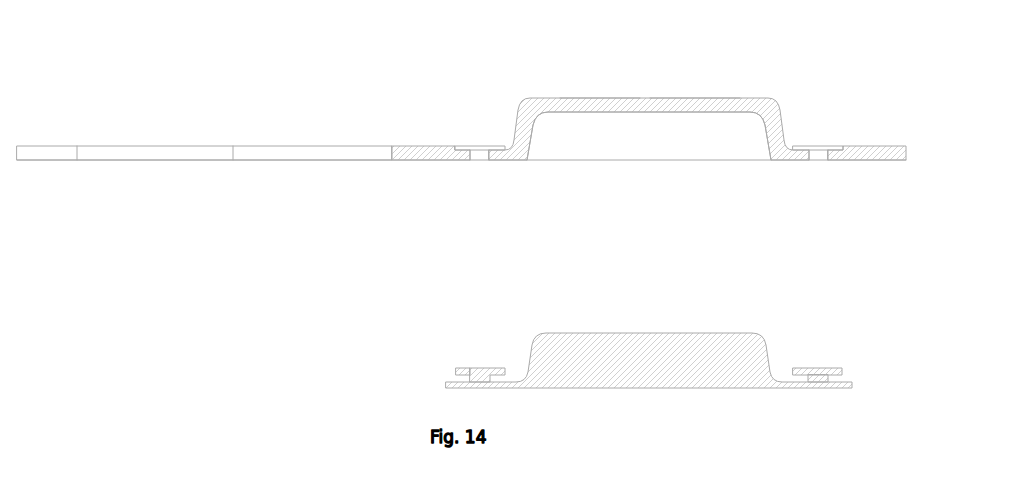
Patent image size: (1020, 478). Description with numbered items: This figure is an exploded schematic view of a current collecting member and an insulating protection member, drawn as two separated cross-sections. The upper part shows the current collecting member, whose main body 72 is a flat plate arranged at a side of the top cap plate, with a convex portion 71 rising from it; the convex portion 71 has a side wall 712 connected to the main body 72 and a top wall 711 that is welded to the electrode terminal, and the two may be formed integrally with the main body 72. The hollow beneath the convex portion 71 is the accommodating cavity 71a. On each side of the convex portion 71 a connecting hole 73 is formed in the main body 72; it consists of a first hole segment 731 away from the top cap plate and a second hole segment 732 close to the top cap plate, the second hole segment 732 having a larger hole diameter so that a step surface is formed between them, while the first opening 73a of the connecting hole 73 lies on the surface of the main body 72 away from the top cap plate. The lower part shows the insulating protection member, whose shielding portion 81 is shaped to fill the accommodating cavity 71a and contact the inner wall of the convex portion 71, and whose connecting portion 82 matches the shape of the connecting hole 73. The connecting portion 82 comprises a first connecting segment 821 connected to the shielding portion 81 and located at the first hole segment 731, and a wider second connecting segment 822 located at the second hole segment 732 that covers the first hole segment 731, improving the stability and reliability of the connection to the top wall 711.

The convex portion 71 is at (649, 109).
The top wall 711 is at (695, 75).
The side wall 712 is at (600, 75).
The accommodating cavity 71a is at (649, 163).
The main body 72 is at (204, 108).
The connecting hole 73 is at (649, 144).
The first hole segment 731 is at (649, 109).
The second hole segment 732 is at (650, 122).
The first opening 73a is at (654, 199).
The shielding portion 81 is at (649, 337).
The connecting portion 82 is at (649, 331).
The first connecting segment 821 is at (672, 352).
The second connecting segment 822 is at (627, 352).